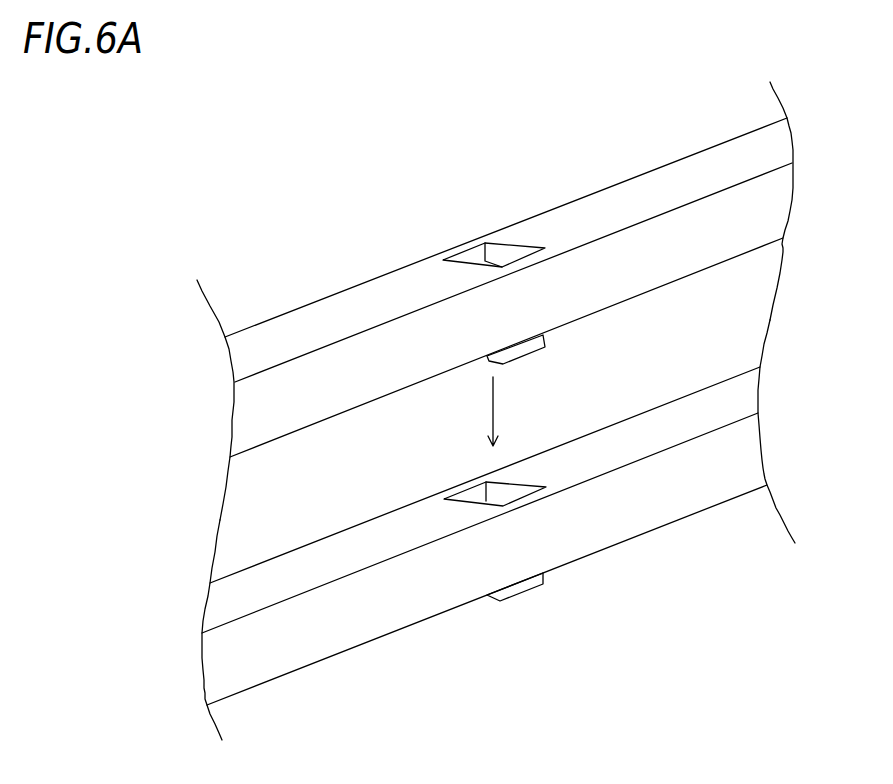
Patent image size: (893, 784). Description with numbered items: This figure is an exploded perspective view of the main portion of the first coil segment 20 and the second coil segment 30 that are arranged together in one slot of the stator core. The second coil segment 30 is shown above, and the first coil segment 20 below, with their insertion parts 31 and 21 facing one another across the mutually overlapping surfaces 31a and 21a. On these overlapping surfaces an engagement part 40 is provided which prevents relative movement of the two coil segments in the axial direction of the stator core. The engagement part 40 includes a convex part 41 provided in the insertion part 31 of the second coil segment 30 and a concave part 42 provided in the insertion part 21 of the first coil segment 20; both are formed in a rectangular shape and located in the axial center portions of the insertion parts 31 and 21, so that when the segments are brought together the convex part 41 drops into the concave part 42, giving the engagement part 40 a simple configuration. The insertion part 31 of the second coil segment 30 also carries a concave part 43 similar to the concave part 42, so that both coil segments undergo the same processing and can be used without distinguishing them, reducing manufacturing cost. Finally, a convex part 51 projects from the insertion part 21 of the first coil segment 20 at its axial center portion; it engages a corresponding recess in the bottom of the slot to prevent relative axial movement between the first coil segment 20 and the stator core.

The first coil segment 20 is at (401, 641).
The insertion part 21 is at (657, 517).
The overlapping surface 21a is at (635, 430).
The second coil segment 30 is at (343, 277).
The insertion part 31 is at (603, 202).
The overlapping surface 31a is at (625, 303).
The engagement part 40 is at (526, 420).
The convex part 41 is at (520, 360).
The concave part 42 is at (508, 493).
The concave part 43 is at (500, 258).
The convex part 51 is at (527, 590).